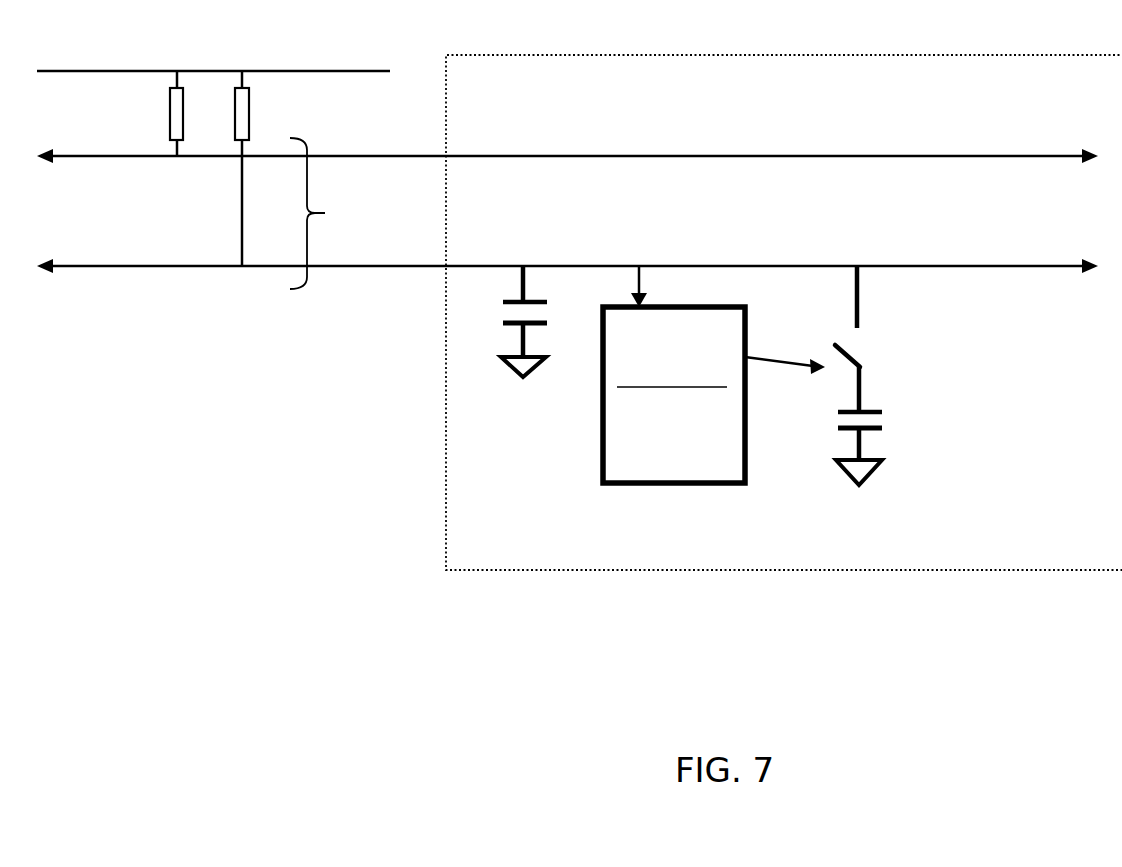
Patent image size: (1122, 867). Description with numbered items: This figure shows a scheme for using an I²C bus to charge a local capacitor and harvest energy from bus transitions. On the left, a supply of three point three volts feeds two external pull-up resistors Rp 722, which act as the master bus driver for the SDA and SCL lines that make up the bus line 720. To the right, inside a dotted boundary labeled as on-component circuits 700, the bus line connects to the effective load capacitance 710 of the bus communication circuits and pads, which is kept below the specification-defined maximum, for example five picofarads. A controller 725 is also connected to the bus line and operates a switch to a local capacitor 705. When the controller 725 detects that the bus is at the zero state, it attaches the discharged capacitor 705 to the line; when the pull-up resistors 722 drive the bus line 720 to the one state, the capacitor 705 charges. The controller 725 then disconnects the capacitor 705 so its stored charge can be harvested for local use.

The on-component circuits 700 is at (1105, 97).
The local capacitor 705 is at (937, 434).
The effective capacitance of the I²C bus driver 710 is at (537, 416).
The bus line 720 is at (394, 252).
The pull-up resistors Rp 722 is at (229, 56).
The controller 725 is at (694, 419).